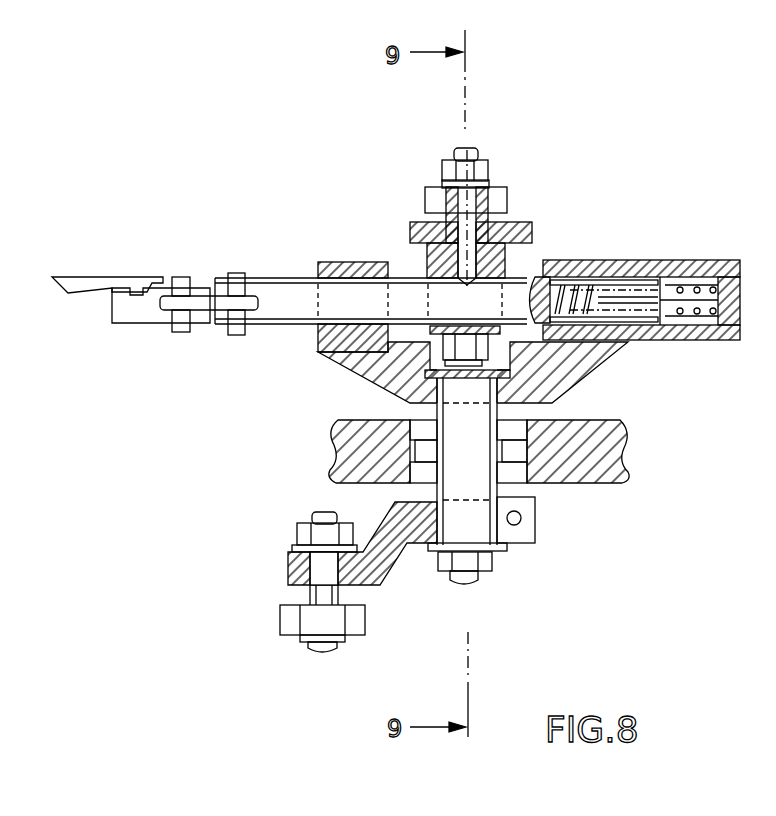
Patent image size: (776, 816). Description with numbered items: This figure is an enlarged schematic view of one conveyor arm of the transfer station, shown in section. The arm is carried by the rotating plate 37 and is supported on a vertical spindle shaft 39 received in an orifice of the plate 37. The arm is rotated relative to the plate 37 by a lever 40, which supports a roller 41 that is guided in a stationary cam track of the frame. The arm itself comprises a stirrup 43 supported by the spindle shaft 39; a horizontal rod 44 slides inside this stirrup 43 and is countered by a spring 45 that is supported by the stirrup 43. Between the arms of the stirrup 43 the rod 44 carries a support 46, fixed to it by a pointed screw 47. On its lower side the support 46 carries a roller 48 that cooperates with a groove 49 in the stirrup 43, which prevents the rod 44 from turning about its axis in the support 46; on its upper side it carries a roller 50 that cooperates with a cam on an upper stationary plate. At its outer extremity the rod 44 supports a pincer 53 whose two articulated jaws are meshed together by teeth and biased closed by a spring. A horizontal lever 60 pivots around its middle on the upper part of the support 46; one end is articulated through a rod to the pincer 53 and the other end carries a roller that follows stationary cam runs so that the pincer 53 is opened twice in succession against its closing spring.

The plate 37 is at (587, 457).
The vertical spindle shaft 39 is at (492, 412).
The lever 40 is at (400, 557).
The roller 41 is at (288, 620).
The stirrup 43 is at (620, 338).
The horizontal rod 44 is at (279, 298).
The spring 45 is at (592, 278).
The support 46 is at (505, 258).
The pointed screw 47 is at (503, 212).
The roller 48 is at (368, 378).
The groove 49 is at (318, 353).
The roller 50 is at (490, 186).
The pincer 53 is at (104, 270).
The horizontal lever 60 is at (410, 228).